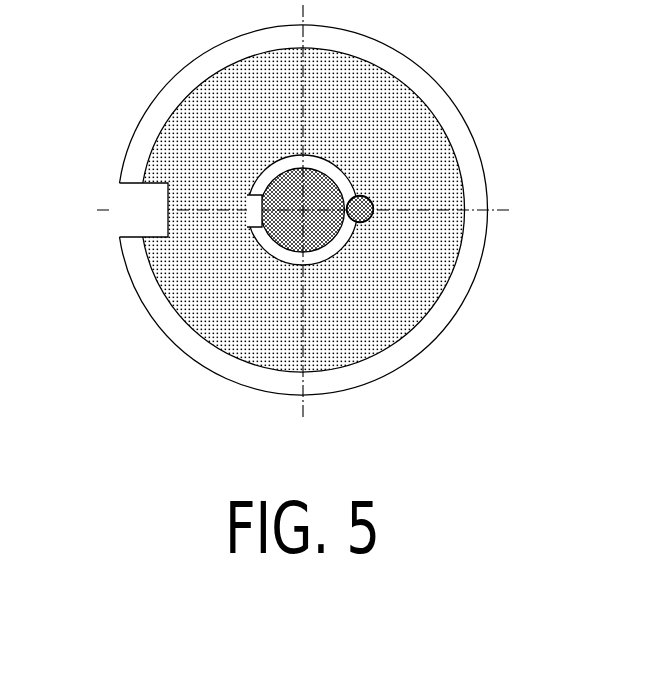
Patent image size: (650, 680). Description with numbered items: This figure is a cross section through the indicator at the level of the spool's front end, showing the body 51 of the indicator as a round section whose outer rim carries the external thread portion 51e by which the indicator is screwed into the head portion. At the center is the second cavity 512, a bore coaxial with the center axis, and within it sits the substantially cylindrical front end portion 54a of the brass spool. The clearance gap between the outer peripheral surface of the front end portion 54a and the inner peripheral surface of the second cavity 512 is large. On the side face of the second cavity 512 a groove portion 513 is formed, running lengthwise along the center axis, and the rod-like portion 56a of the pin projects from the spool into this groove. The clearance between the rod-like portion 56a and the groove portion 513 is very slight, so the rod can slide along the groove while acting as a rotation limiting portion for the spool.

The rotary disk 51 is at (307, 192).
The external thread portion 51e is at (285, 210).
The front end portion 54a is at (188, 165).
The rod-like portion 56a is at (467, 178).
The second cavity 512 is at (368, 296).
The groove portion 513 is at (440, 283).